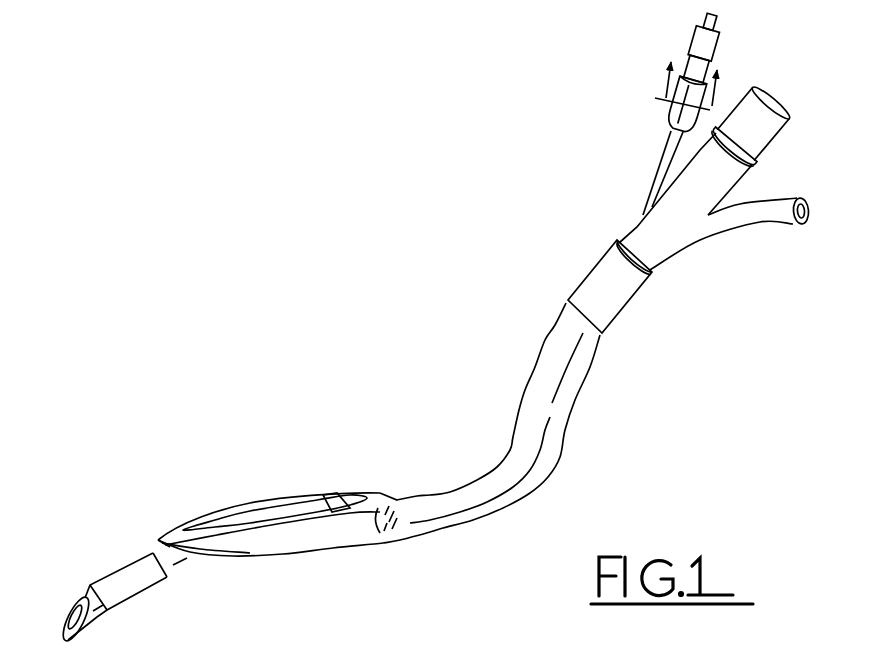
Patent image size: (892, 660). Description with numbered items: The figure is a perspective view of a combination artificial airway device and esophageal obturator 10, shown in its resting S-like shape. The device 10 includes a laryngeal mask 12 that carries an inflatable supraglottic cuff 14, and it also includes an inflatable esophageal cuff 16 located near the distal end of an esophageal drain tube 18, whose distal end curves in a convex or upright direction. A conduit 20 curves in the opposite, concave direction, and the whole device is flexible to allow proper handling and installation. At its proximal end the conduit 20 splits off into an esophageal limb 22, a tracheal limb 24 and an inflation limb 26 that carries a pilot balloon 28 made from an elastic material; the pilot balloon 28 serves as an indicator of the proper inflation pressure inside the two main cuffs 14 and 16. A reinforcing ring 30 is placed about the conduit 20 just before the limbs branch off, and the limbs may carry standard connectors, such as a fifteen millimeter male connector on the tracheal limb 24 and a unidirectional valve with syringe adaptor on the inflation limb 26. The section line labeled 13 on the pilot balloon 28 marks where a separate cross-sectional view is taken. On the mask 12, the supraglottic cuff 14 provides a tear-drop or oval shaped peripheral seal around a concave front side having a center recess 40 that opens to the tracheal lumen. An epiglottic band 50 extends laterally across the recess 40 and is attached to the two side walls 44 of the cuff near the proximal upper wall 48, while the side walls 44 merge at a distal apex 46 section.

The combination artificial airway device and esophageal obturator 10 is at (490, 268).
The laryngeal mask 12 is at (380, 452).
The section line 13- 13 is at (697, 64).
The inflatable supraglottic cuff 14 is at (380, 540).
The inflatable esophageal cuff 16 is at (122, 565).
The esophageal drain tube 18 is at (82, 597).
The conduit 20 is at (528, 448).
The esophageal limb 22 is at (760, 222).
The tracheal limb 24 is at (733, 175).
The inflation limb 26 is at (660, 155).
The pilot balloon 28 is at (668, 115).
The reinforcing ring 30 is at (628, 297).
The center recess 40 is at (227, 520).
The side walls 44 is at (265, 503).
The distal apex 46 is at (170, 533).
The proximal upper wall 48 is at (383, 492).
The epiglottic band 50 is at (333, 495).